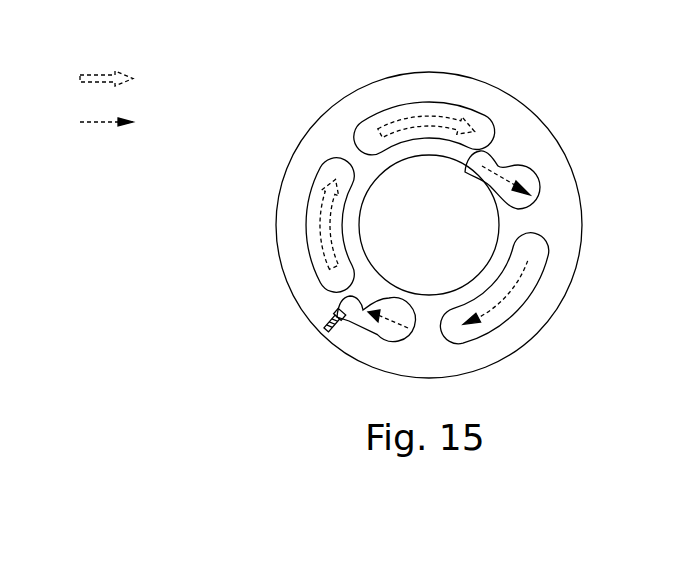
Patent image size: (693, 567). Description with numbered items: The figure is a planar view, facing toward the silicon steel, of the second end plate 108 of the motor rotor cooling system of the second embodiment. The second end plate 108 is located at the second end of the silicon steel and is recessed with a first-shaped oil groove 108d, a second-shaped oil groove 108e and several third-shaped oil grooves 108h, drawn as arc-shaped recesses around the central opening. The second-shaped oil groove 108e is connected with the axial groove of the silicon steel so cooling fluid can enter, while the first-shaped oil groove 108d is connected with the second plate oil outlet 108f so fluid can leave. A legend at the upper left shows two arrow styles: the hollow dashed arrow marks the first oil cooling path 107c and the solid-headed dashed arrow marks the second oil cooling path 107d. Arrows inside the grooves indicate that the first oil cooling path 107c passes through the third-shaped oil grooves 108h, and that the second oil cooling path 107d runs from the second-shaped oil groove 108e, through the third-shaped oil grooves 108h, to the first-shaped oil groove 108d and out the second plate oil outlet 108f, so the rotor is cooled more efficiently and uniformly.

The first oil cooling path 107c is at (136, 77).
The second oil cooling path 107d is at (137, 122).
The second end plate 108 is at (318, 97).
The third-shaped oil groove 108h is at (358, 133).
The second-shaped oil groove 108e is at (541, 182).
The first-shaped oil groove 108d is at (361, 338).
The second plate oil outlet 108f is at (326, 332).